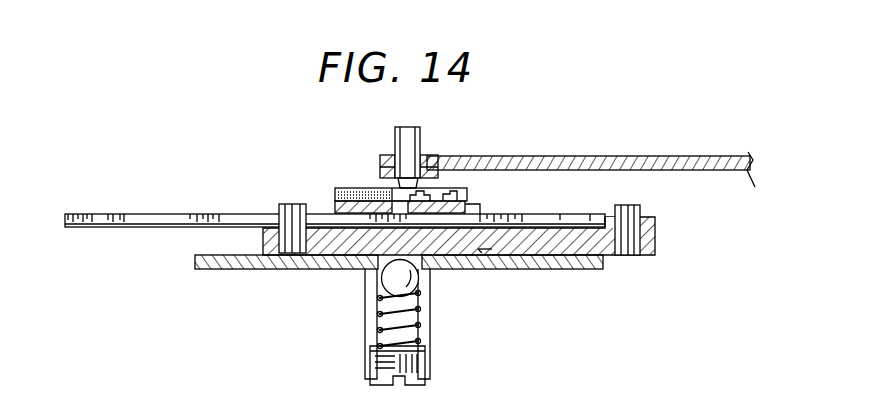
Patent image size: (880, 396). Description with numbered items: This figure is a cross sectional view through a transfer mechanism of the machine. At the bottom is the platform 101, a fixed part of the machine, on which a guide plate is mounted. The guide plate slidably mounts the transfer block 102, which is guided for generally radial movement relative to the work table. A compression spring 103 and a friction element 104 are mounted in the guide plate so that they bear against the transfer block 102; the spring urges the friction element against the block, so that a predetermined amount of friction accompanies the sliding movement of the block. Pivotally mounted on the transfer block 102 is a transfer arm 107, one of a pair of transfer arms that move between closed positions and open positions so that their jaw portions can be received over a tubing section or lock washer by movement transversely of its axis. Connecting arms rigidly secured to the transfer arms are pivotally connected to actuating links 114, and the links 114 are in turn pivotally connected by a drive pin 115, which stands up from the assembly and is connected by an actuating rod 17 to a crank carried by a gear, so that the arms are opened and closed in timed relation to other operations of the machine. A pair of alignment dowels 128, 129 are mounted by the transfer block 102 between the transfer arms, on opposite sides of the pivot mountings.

The arm 17 is at (537, 160).
The platform 101 is at (588, 270).
The transfer block 102 is at (548, 250).
The compression spring 103 is at (403, 313).
The friction element 104 is at (403, 276).
The transfer arm 107 is at (177, 223).
The actuating link 114 is at (380, 170).
The drive pin 115 is at (424, 134).
The alignment dowel 128 is at (320, 167).
The alignment dowel 129 is at (632, 208).